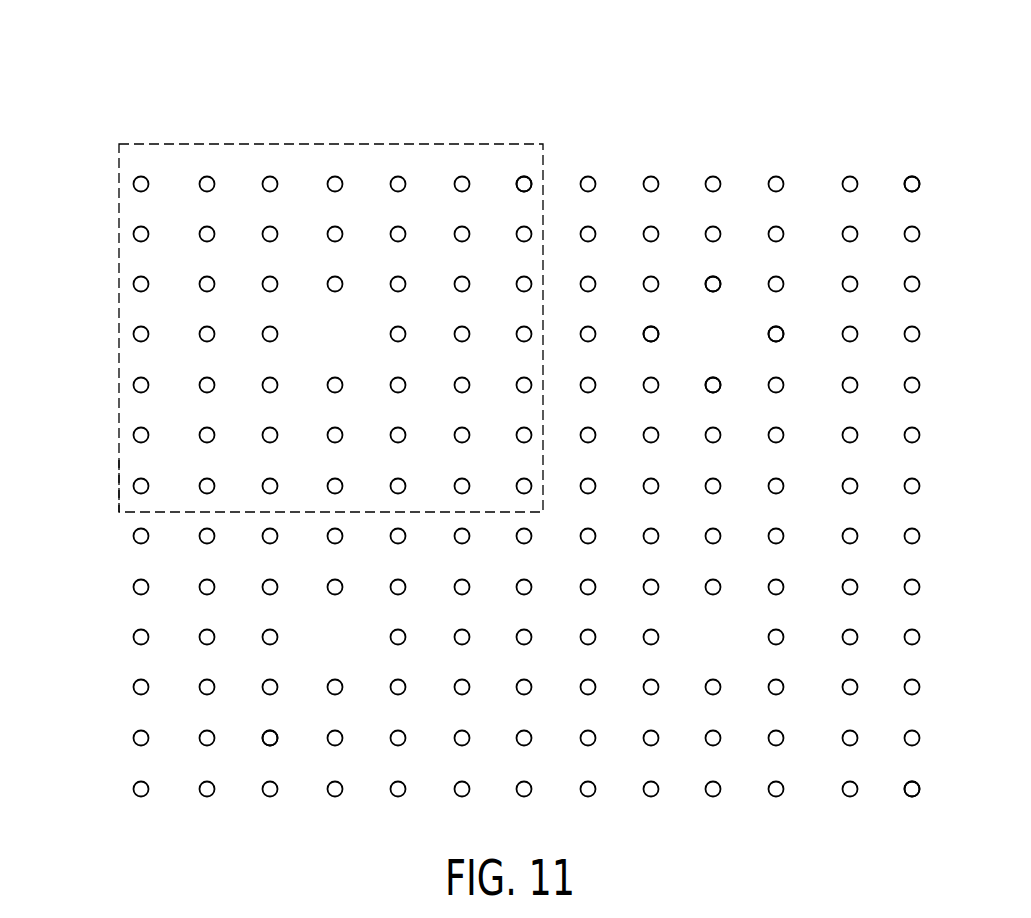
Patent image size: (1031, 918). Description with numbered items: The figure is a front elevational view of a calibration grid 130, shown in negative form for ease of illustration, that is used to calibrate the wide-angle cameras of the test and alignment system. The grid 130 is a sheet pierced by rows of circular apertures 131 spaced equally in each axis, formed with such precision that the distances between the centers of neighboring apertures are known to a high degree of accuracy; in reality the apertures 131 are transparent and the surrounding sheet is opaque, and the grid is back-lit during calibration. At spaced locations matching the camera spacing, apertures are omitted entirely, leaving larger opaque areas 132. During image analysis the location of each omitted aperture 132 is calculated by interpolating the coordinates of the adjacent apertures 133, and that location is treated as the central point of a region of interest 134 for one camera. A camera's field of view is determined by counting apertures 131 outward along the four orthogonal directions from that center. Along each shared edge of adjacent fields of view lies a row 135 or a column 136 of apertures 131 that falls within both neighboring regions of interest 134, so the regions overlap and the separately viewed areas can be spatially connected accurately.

The calibration grid 130 is at (605, 91).
The apertures 131 is at (920, 183).
The omitted apertures 132 is at (737, 340).
The adjacent apertures 133 is at (655, 333).
The region of interest 134 is at (257, 143).
The row 135 is at (120, 485).
The column 136 is at (527, 163).